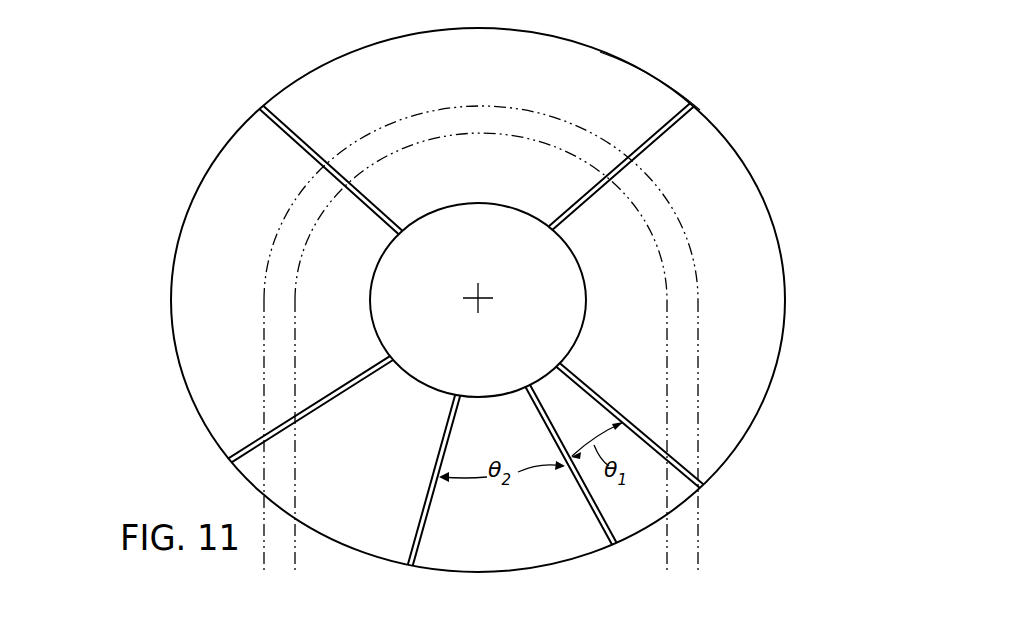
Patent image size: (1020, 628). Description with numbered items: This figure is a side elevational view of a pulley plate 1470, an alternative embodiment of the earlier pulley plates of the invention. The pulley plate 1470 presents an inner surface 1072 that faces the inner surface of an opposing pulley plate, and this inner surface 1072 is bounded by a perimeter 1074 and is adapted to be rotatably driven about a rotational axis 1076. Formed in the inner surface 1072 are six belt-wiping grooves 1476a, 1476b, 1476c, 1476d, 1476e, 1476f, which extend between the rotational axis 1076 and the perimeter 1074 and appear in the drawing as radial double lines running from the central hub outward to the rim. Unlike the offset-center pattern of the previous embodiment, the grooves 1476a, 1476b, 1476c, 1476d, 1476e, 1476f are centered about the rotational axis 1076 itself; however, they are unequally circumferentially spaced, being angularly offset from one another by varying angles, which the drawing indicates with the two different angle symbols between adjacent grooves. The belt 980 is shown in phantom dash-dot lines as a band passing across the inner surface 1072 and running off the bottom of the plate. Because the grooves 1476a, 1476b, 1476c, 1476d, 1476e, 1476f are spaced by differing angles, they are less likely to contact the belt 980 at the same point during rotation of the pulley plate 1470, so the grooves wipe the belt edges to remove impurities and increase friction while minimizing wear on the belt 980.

The pulley plate 1470 is at (178, 128).
The inner surface 1072 is at (595, 68).
The perimeter 1074 is at (647, 72).
The rotational axis 1076 is at (480, 298).
The belt 980 is at (698, 550).
The belt-wiping groove 1476a is at (678, 463).
The belt-wiping groove 1476b is at (597, 517).
The belt-wiping groove 1476c is at (424, 527).
The belt-wiping groove 1476d is at (248, 446).
The belt-wiping groove 1476e is at (285, 131).
The belt-wiping groove 1476f is at (667, 130).